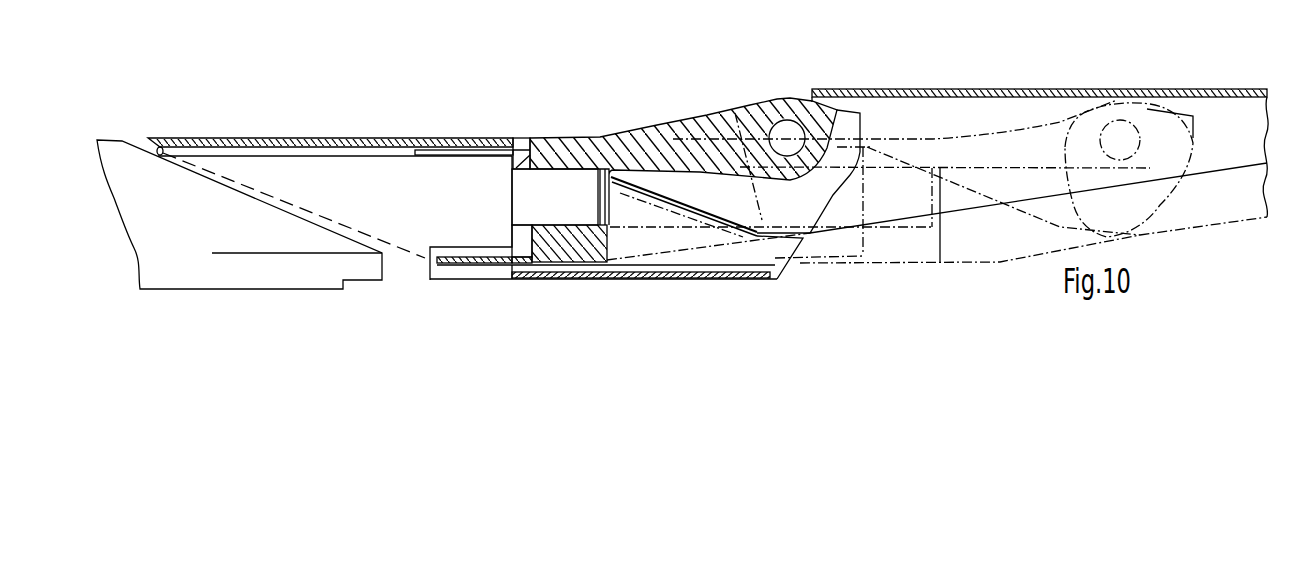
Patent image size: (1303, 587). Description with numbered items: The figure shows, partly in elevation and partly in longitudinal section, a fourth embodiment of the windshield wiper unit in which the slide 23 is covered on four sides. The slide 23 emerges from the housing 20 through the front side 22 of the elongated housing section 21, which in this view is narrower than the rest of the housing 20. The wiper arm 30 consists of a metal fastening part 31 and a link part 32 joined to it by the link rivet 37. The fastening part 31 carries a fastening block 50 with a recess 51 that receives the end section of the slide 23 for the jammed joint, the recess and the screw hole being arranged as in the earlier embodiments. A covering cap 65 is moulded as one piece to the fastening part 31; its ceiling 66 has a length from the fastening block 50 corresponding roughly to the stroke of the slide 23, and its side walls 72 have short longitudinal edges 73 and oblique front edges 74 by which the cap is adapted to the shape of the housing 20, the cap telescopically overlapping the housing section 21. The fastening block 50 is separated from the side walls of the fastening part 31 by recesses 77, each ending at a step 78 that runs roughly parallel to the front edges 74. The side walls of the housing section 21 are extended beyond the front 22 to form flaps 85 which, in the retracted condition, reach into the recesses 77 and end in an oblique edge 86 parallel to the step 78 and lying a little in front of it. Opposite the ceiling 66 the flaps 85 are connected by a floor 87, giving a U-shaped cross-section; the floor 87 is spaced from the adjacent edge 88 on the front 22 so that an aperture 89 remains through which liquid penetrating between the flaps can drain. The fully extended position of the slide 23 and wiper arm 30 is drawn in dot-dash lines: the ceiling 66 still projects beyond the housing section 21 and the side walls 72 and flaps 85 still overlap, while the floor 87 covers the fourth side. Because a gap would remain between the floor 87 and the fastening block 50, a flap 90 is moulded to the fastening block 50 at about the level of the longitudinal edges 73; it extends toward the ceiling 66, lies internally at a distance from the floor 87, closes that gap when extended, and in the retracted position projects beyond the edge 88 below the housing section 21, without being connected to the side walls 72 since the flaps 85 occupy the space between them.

The housing 20 is at (208, 225).
The housing section 21 is at (390, 154).
The front side 22 is at (517, 162).
The slide 23 is at (545, 207).
The wiper arm 30 is at (957, 89).
The fastening part 31 is at (703, 130).
The link part 32 is at (861, 89).
The link rivet 37 is at (787, 123).
The fastening block 50 is at (596, 252).
The recess 51 is at (612, 223).
The covering cap 65 is at (360, 138).
The ceiling 66 is at (457, 139).
The side walls 72 is at (317, 146).
The longitudinal edges 73 is at (440, 266).
The front edge 74 is at (160, 146).
The recesses 77 is at (688, 211).
The step 78 is at (663, 199).
The flaps 85 is at (718, 253).
The oblique edge 86 is at (715, 216).
The floor 87 is at (656, 278).
The edge 88 is at (497, 266).
The aperture 89 is at (510, 268).
The flap 90 is at (473, 266).